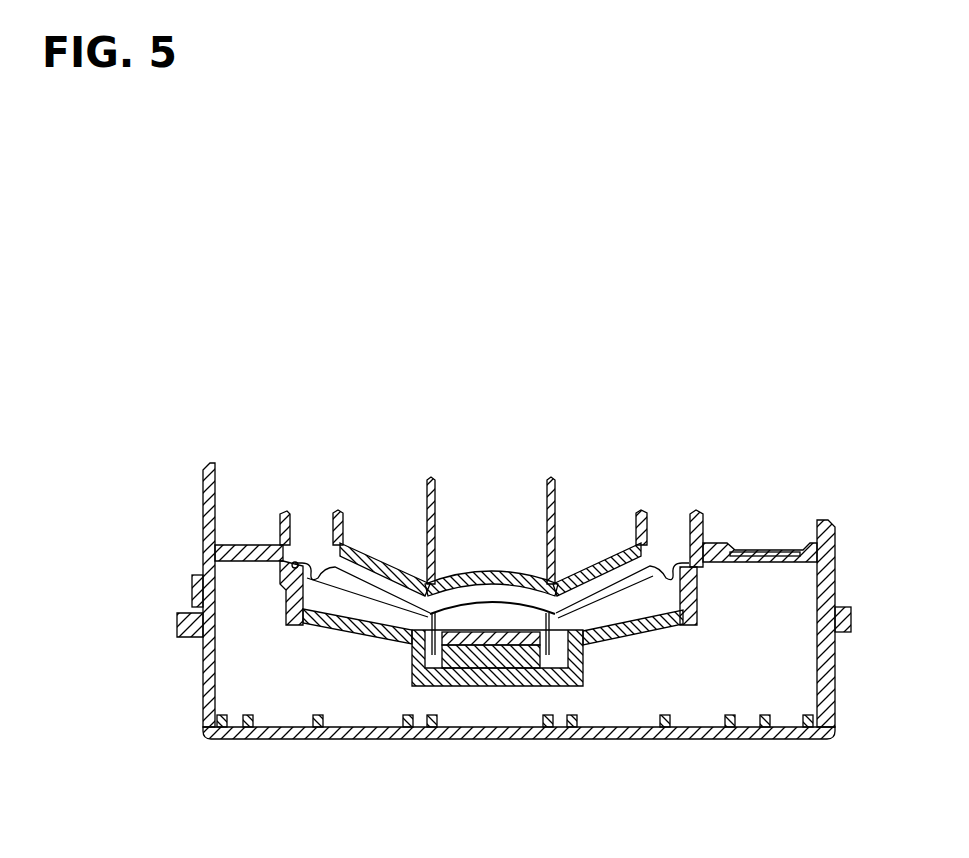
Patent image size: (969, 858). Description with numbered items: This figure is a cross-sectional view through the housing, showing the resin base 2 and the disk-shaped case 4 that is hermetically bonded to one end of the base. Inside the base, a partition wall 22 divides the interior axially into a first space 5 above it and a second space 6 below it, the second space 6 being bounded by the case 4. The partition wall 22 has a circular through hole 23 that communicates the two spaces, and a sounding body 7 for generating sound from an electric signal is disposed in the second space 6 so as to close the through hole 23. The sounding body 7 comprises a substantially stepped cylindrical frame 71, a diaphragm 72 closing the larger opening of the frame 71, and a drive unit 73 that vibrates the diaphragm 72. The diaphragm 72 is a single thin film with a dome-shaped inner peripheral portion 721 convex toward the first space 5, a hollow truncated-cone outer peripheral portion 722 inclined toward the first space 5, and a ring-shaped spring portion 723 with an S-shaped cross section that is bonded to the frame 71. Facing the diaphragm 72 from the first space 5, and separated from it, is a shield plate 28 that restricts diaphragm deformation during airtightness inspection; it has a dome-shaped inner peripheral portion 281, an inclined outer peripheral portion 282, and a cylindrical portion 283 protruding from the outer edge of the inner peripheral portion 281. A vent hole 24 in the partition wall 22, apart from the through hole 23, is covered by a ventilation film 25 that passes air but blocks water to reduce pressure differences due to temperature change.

The base 2 is at (199, 548).
The case 4 is at (197, 666).
The first space 5 is at (327, 482).
The second space 6 is at (752, 667).
The sounding body 7 is at (556, 692).
The partition wall 22 is at (242, 544).
The through hole 23 is at (292, 511).
The vent hole 24 is at (783, 552).
The ventilation film 25 is at (758, 551).
The shield plate 28 is at (460, 568).
The frame 71 is at (620, 640).
The diaphragm 72 is at (424, 560).
The drive unit 73 is at (460, 692).
The inner peripheral portion 281 is at (456, 596).
The outer peripheral portion 282 is at (594, 561).
The cylindrical portion 283 is at (552, 484).
The inner peripheral portion 721 is at (504, 601).
The outer peripheral portion 722 is at (622, 553).
The spring portion 723 is at (687, 563).